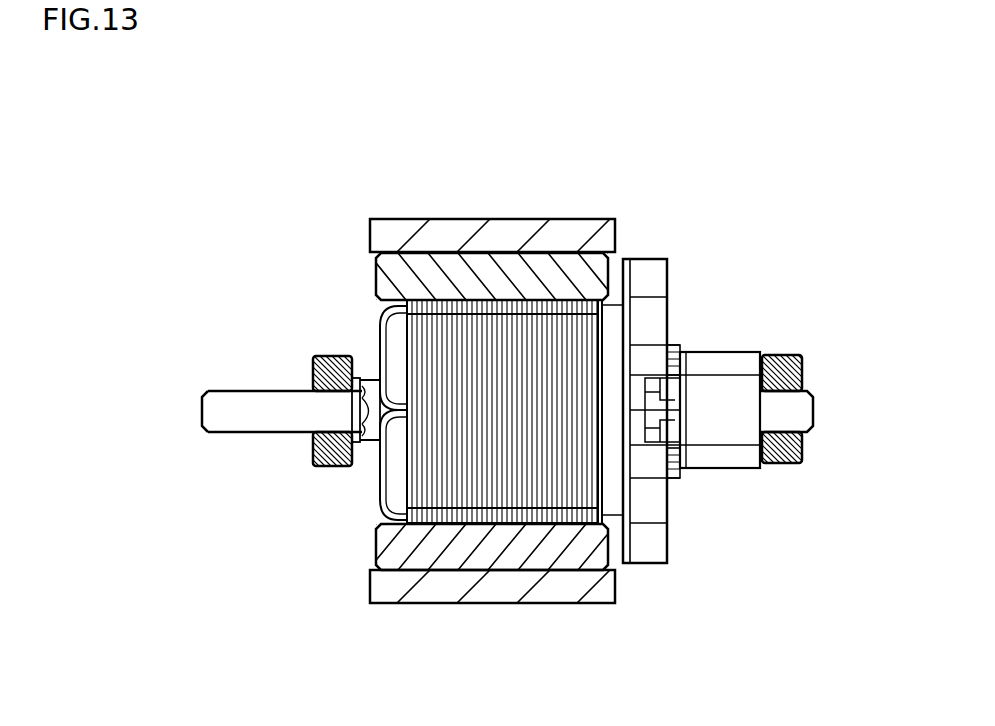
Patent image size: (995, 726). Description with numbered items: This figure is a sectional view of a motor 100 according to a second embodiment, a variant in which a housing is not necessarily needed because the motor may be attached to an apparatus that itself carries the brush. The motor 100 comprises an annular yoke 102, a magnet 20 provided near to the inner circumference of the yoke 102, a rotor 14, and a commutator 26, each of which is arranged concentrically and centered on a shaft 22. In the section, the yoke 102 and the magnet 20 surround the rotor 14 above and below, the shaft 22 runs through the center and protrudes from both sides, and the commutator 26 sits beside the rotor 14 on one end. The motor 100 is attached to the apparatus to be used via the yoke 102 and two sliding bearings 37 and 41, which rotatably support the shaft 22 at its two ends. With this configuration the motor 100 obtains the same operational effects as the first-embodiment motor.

The motor 100 is at (649, 182).
The annular yoke 102 is at (470, 217).
The magnet 20 is at (492, 233).
The rotor 14 is at (362, 484).
The shaft 22 is at (228, 432).
The sliding bearing 41 is at (336, 356).
The commutator 26 is at (692, 486).
The sliding bearing 37 is at (780, 464).